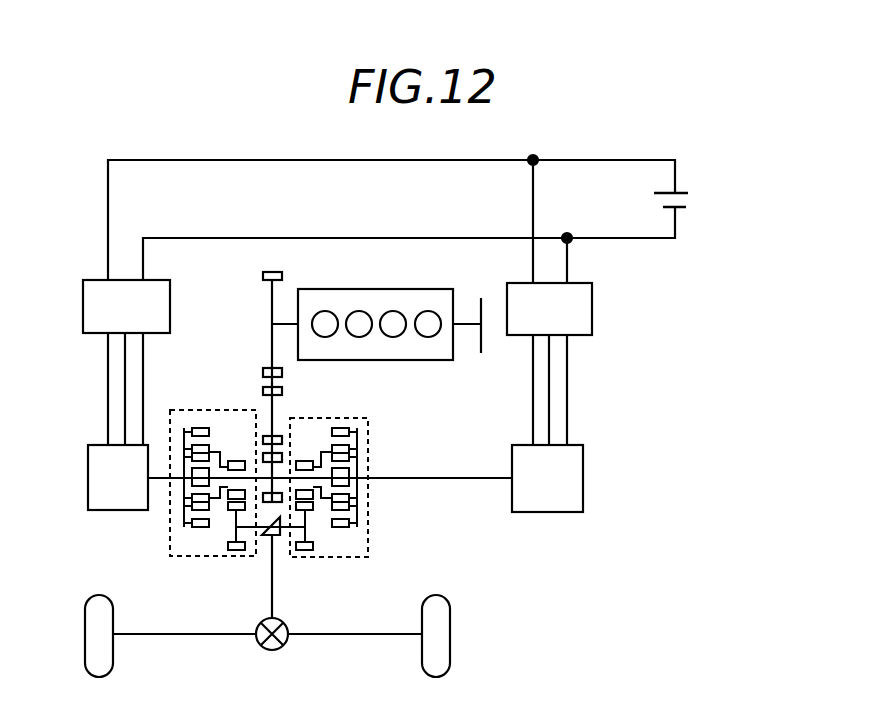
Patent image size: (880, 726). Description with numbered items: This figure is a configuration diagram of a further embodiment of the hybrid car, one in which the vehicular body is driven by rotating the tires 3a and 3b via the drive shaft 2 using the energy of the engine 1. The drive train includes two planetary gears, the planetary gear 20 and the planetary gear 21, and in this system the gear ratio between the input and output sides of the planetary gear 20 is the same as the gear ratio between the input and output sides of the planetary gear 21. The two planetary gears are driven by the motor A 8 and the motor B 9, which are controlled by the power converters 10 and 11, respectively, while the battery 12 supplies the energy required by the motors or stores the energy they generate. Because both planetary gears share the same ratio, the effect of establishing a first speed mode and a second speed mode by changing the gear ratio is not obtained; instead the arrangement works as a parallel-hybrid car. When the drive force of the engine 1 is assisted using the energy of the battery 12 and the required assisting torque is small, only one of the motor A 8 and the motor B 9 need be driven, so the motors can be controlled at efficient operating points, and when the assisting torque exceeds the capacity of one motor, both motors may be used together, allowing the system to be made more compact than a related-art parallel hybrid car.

The engine 1 is at (453, 289).
The drive shaft 2 is at (332, 634).
The tire 3a is at (113, 618).
The tire 3b is at (450, 612).
The motor A 8 is at (578, 443).
The motor B 9 is at (88, 467).
The power converter 10 is at (592, 313).
The power converter 11 is at (170, 305).
The battery 12 is at (683, 193).
The planetary gear 20 is at (365, 418).
The planetary gear 21 is at (200, 410).